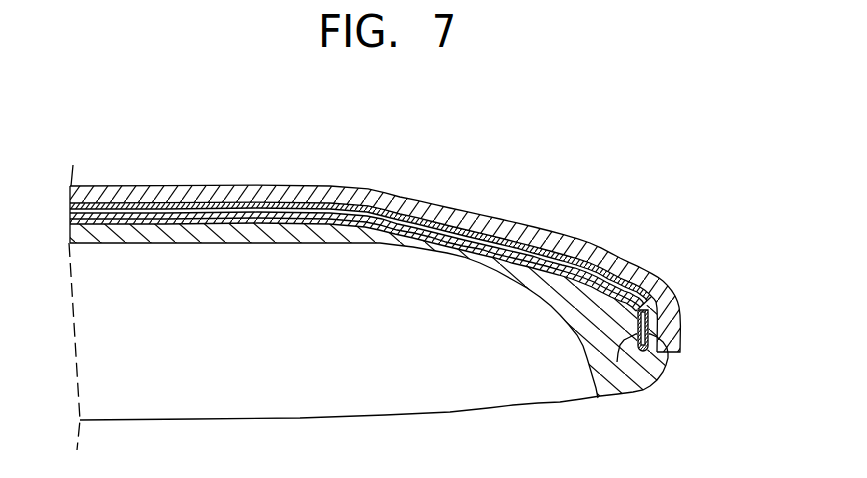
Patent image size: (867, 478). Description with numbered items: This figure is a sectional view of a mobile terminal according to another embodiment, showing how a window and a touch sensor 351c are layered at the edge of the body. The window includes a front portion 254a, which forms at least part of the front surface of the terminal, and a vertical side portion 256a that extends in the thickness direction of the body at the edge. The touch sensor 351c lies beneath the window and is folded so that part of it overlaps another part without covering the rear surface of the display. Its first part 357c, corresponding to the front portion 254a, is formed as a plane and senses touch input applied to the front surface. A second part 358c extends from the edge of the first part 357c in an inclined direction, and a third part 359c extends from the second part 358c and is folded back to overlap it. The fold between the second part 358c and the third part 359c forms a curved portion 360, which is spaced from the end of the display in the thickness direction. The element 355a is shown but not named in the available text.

The front portion 254a is at (121, 196).
The vertical side portion 256a is at (668, 316).
The first part 357c is at (361, 213).
The touch sensor 351c is at (389, 209).
The polarizing layer 355a is at (455, 207).
The second part 358c is at (493, 222).
The third part 359c is at (369, 343).
The curved portion 360 is at (659, 358).